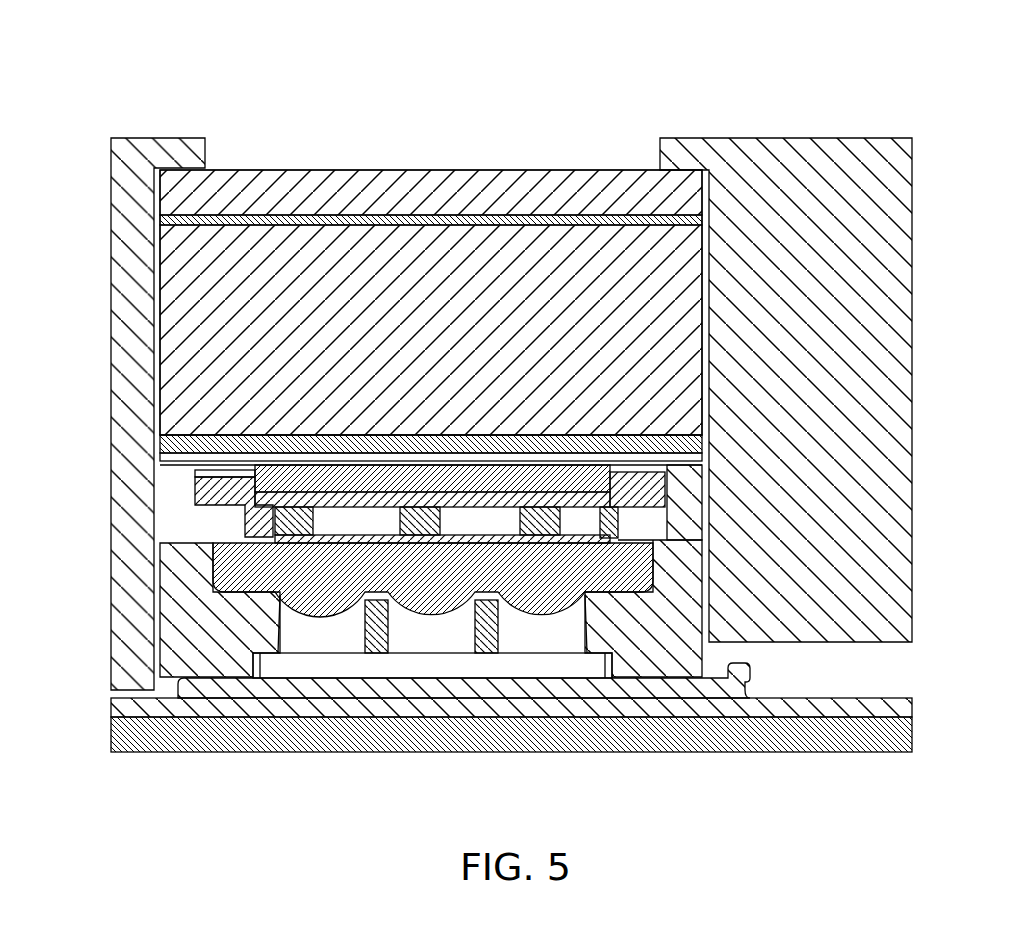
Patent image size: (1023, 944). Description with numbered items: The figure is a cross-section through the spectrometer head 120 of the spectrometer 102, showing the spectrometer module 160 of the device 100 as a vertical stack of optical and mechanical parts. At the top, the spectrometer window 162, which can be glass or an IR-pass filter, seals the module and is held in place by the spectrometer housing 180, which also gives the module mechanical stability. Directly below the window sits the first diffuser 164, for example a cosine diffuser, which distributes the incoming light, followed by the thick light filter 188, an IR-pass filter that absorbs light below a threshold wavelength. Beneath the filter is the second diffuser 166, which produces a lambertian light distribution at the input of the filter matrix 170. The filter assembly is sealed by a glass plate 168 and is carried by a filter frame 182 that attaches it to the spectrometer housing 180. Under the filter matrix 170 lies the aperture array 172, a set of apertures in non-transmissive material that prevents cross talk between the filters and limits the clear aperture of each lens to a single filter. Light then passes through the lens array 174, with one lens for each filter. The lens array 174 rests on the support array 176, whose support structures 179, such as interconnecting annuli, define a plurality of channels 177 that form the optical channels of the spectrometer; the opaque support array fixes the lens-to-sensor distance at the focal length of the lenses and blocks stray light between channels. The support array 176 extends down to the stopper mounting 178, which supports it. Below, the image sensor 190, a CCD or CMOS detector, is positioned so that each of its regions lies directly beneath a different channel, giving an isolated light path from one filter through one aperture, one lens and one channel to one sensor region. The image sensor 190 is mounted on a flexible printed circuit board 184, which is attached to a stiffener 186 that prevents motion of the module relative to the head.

The camera module 100 is at (108, 90).
The spectrometer 102 is at (236, 102).
The spectrometer head 120 is at (332, 76).
The spectrometer module 160 is at (668, 242).
The spectrometer window 162 is at (555, 190).
The first diffuser 164 is at (165, 218).
The second diffuser 166 is at (695, 440).
The glass plate 168 is at (600, 468).
The filter matrix 170 is at (210, 490).
The aperture array 172 is at (245, 525).
The lens array 174 is at (235, 575).
The support array 176 is at (665, 625).
The channels 177 is at (537, 635).
The stopper mounting 178 is at (432, 668).
The support structures 179 is at (378, 635).
The spectrometer housing 180 is at (890, 242).
The filter frame 182 is at (690, 508).
The flexible printed circuit board 184 is at (890, 707).
The stiffener 186 is at (890, 735).
The light filter 188 is at (678, 365).
The image sensor 190 is at (735, 690).